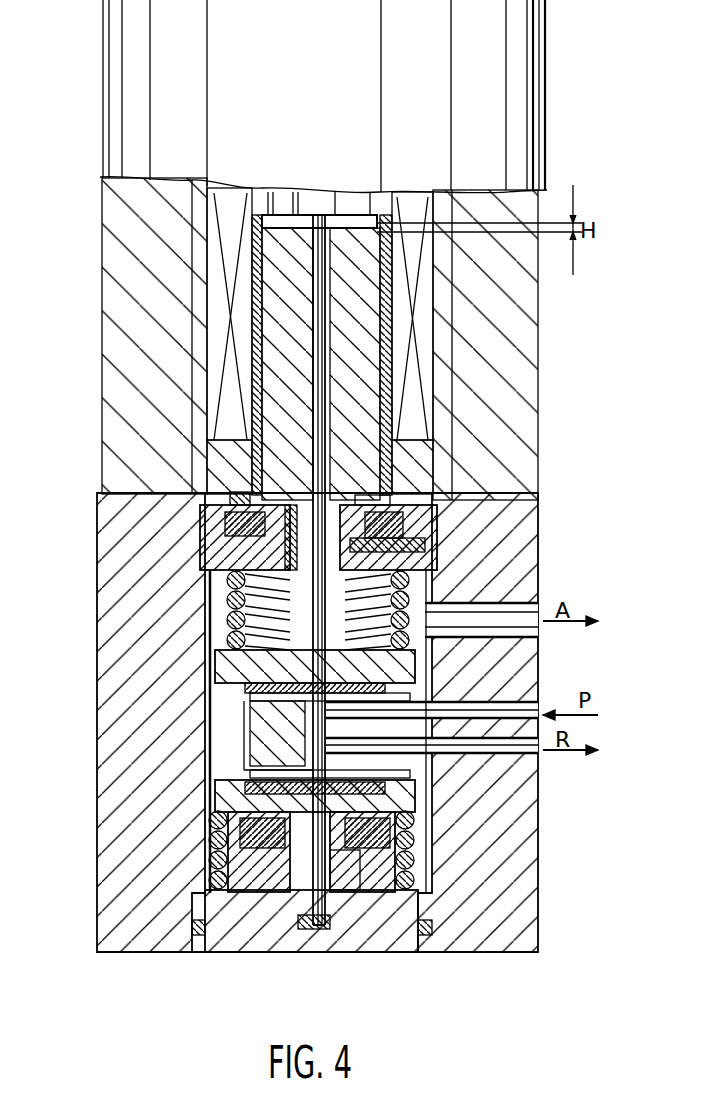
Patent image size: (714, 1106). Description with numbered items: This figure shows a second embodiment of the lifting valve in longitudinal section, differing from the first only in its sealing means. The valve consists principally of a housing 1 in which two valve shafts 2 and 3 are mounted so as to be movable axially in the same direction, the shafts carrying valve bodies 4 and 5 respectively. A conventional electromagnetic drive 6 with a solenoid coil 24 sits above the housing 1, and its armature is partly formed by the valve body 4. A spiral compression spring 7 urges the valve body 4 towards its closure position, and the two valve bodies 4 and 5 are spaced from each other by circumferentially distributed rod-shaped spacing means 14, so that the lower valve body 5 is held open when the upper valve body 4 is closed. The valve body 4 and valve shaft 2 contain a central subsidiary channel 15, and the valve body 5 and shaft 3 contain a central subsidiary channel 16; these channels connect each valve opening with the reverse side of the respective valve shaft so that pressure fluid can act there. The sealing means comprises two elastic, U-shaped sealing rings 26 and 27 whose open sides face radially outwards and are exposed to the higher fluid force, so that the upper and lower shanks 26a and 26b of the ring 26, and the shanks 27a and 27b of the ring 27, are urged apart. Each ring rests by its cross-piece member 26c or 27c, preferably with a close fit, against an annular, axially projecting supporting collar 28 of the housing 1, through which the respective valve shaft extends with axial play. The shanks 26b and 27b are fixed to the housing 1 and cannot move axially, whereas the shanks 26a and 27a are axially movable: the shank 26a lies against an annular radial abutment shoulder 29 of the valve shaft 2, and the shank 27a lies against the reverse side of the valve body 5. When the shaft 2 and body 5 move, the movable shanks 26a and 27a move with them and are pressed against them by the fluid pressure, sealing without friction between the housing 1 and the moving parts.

The housing 1 is at (105, 888).
The valve shaft 2 is at (283, 240).
The valve shaft 3 is at (312, 930).
The valve body 4 is at (218, 656).
The valve body 5 is at (416, 790).
The electromagnetic drive 6 is at (520, 98).
The spiral compression spring 7 is at (410, 580).
The spacing means 14 is at (222, 745).
The subsidiary channel 15 is at (318, 240).
The subsidiary channel 16 is at (320, 930).
The solenoid coil 24 is at (412, 200).
The sealing ring 26 is at (232, 545).
The upper shank 26a is at (440, 515).
The lower shank 26b is at (395, 545).
The cross-piece member 26c is at (368, 510).
The sealing ring 27 is at (222, 825).
The upper shank 27a is at (410, 820).
The lower shank 27b is at (415, 848).
The cross-piece member 27c is at (355, 900).
The supporting collar 28 is at (298, 522).
The abutment shoulder 29 is at (218, 518).